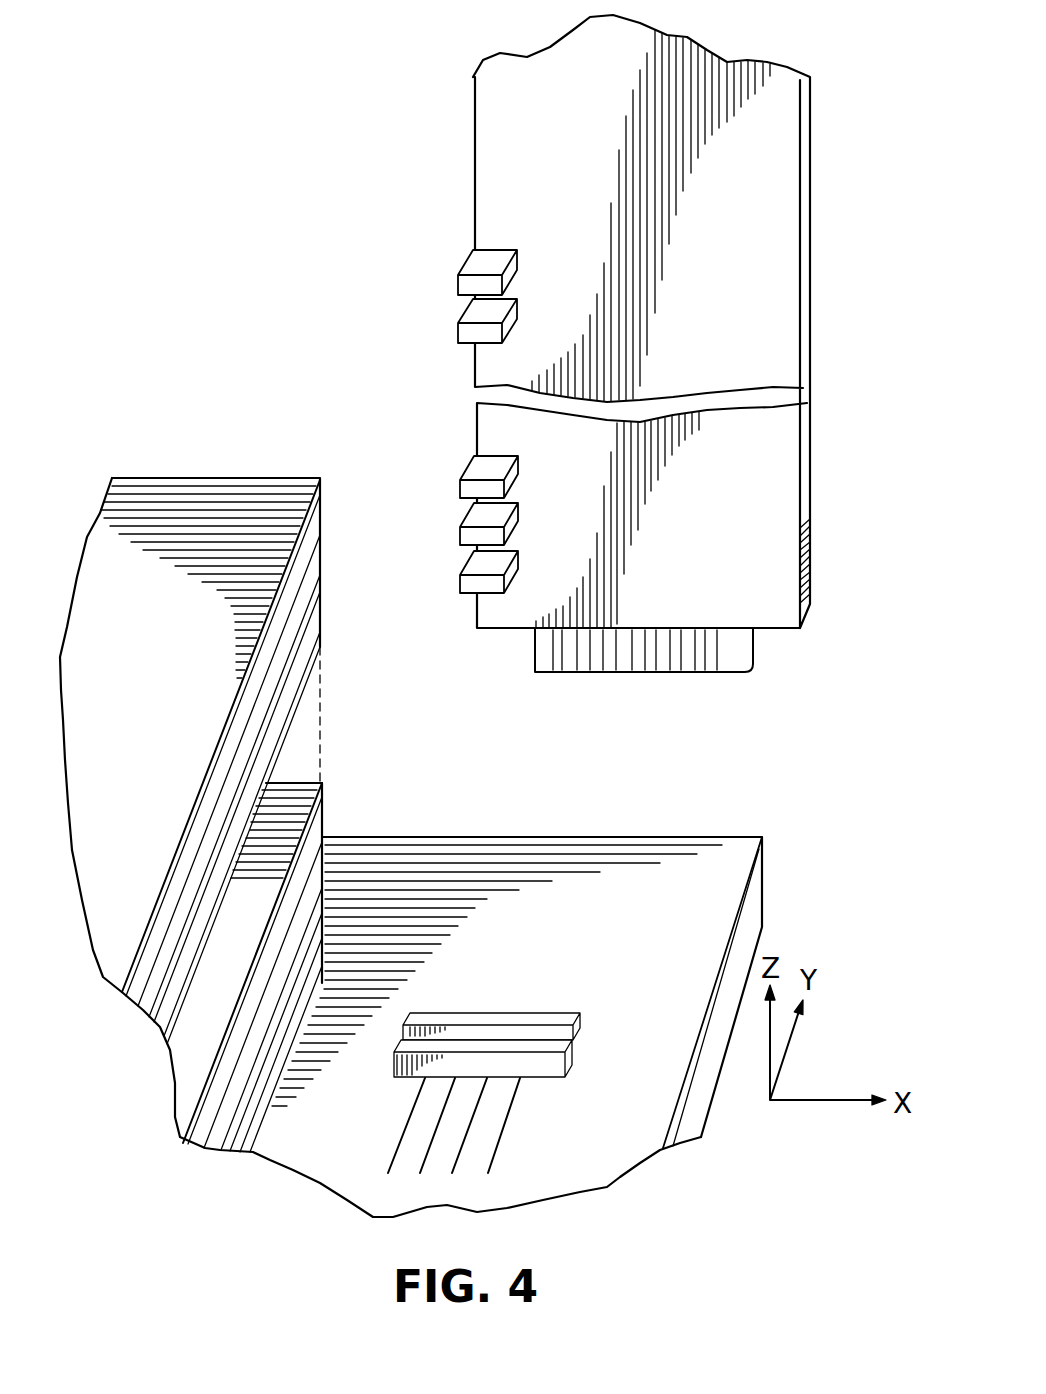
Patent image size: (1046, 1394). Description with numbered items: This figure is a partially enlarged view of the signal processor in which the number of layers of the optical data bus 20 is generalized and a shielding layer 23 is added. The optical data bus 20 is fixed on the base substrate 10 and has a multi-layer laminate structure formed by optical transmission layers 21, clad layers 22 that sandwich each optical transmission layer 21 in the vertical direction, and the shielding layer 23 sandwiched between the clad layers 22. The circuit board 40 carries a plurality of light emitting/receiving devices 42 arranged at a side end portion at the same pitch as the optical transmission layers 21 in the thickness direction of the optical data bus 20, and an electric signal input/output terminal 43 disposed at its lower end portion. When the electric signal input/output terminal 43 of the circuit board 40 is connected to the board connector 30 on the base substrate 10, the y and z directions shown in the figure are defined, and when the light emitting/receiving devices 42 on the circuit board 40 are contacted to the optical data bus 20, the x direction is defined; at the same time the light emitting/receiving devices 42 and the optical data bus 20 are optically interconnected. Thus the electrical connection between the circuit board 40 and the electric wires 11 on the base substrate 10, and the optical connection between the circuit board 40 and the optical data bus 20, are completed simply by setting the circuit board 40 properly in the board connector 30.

The base substrate 10 is at (649, 852).
The electric wires 11 is at (497, 1153).
The optical data bus 20 is at (350, 745).
The optical transmission layers 21 is at (305, 552).
The clad layers 22 is at (308, 568).
The shielding layer 23 is at (298, 622).
The board connector 30 is at (532, 995).
The circuit board 40 is at (766, 212).
The light emitting/receiving devices 42 is at (513, 333).
The electric signal input/output terminal 43 is at (731, 660).